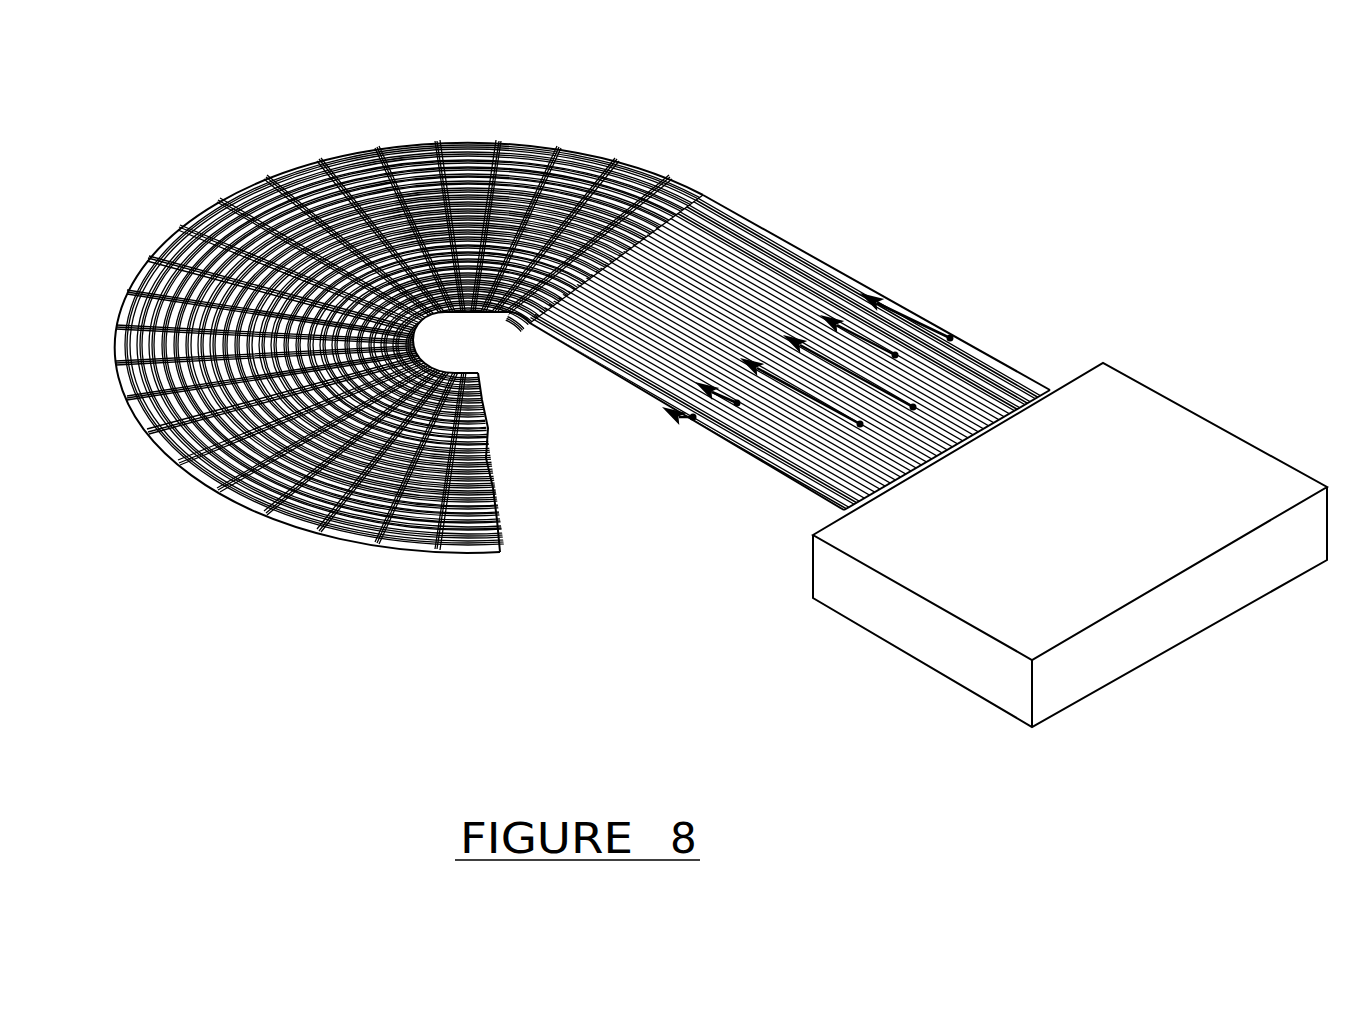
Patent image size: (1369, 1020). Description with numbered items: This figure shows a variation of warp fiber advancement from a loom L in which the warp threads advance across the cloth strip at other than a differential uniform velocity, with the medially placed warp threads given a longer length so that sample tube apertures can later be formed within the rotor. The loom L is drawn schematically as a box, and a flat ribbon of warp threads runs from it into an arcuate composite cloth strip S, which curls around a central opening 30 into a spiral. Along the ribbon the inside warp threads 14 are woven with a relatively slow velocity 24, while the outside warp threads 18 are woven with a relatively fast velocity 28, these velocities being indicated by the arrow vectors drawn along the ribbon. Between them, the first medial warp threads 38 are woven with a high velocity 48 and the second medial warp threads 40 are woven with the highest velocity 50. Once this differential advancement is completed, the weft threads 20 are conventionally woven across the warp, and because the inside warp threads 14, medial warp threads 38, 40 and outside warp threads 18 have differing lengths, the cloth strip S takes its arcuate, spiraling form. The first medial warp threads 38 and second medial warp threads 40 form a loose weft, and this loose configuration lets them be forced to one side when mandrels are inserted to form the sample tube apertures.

The arcuate composite cloth strip S is at (470, 142).
The loom L is at (1100, 531).
The inside warp threads 14 is at (730, 452).
The outside warp threads 18 is at (948, 338).
The weft threads 20 is at (704, 197).
The relatively slow velocity 24 is at (673, 420).
The relatively fast velocity 28 is at (905, 305).
The central opening 30 is at (488, 447).
The first medial warp threads 38 is at (770, 370).
The second medial warp threads 40 is at (488, 465).
The high velocity 48 is at (825, 405).
The highest velocity 50 is at (885, 388).